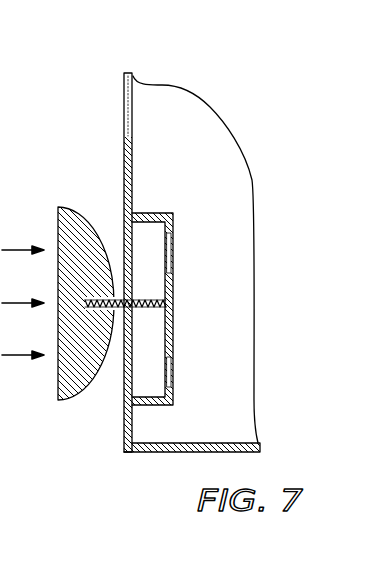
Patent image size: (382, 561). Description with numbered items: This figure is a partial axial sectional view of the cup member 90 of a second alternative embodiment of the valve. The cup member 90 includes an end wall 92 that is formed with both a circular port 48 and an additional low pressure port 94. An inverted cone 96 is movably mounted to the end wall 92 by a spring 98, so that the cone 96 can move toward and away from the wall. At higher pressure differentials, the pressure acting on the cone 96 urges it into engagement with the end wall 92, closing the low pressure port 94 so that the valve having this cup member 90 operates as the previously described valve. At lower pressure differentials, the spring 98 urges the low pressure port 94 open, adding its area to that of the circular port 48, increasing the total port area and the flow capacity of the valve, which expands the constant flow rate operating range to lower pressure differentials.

The circular port 48 is at (124, 97).
The cup member 90 is at (206, 105).
The end wall 92 is at (130, 441).
The low pressure port 94 is at (127, 250).
The inverted cone 96 is at (67, 233).
The spring 98 is at (164, 302).